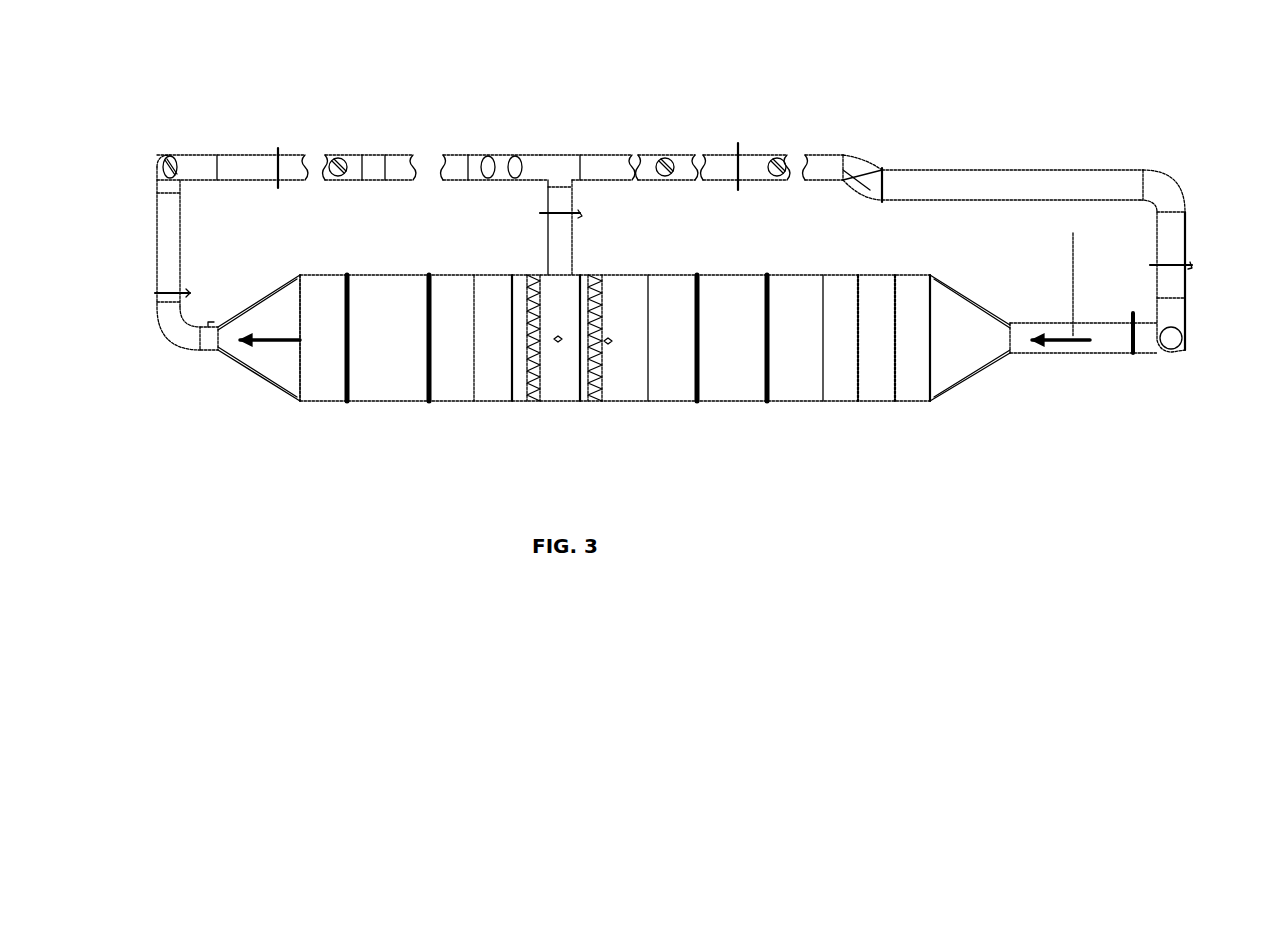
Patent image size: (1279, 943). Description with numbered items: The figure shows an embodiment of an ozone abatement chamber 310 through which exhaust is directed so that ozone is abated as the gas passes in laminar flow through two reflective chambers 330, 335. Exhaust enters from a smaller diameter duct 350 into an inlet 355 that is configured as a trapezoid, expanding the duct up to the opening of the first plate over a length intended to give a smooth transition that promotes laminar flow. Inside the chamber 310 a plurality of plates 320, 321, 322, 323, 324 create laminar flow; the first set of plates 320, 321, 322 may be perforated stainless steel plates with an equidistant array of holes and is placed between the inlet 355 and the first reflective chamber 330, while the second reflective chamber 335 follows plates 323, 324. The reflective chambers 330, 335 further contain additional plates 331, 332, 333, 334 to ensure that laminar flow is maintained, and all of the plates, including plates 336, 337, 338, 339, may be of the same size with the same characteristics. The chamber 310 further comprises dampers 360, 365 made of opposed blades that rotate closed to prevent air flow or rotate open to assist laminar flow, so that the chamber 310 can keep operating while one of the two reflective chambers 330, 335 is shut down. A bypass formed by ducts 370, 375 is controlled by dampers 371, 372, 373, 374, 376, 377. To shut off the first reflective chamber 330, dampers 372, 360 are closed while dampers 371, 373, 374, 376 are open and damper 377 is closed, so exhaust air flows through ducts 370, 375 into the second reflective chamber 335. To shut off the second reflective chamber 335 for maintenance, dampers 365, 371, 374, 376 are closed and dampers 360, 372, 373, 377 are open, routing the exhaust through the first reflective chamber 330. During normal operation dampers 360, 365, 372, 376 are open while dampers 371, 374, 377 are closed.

The ozone abatement chamber 310 is at (1127, 77).
The plate 320 is at (930, 410).
The plate 321 is at (896, 271).
The plate 322 is at (858, 406).
The plate 323 is at (581, 406).
The plate 324 is at (512, 406).
The reflective chamber 330 is at (645, 272).
The plate 331 is at (766, 406).
The plate 332 is at (698, 406).
The plate 333 is at (430, 406).
The plate 334 is at (348, 406).
The reflective chamber 335 is at (478, 268).
The plate 336 is at (830, 410).
The plate 337 is at (658, 410).
The plate 338 is at (474, 425).
The plate 339 is at (304, 408).
The duct 350 is at (1087, 360).
The inlet 355 is at (972, 290).
The damper 360 is at (600, 406).
The damper 365 is at (528, 270).
The duct 370 is at (950, 165).
The damper 371 is at (1194, 265).
The damper 372 is at (1131, 315).
The damper 373 is at (580, 210).
The damper 374 is at (739, 145).
The duct 375 is at (580, 237).
The damper 376 is at (152, 296).
The damper 377 is at (282, 146).